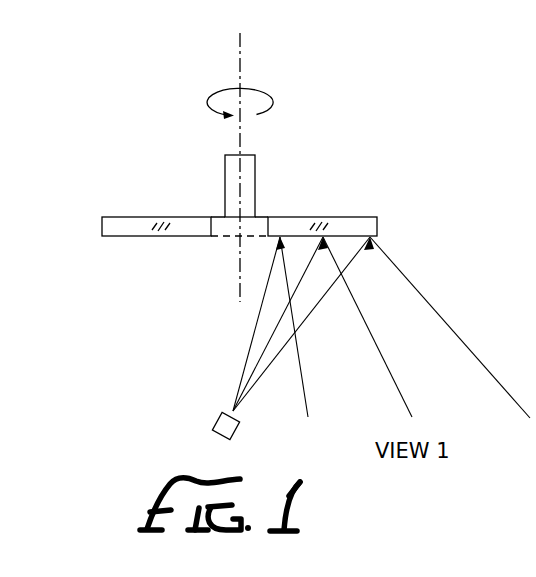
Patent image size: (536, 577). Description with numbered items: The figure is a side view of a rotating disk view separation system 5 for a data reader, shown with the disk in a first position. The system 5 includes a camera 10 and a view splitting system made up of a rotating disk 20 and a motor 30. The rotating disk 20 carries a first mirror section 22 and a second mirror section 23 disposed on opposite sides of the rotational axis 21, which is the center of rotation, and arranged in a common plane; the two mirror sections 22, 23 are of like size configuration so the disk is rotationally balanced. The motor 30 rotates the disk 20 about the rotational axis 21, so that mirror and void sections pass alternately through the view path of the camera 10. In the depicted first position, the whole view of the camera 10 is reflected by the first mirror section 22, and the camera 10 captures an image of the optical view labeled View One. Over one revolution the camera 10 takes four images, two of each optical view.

The rotating disk view separation system 5 is at (303, 51).
The camera 10 is at (213, 418).
The rotating disk 20 is at (211, 219).
The rotational axis 21 is at (237, 50).
The first mirror section 22 is at (353, 216).
The second mirror section 23 is at (186, 237).
The motor 30 is at (256, 182).